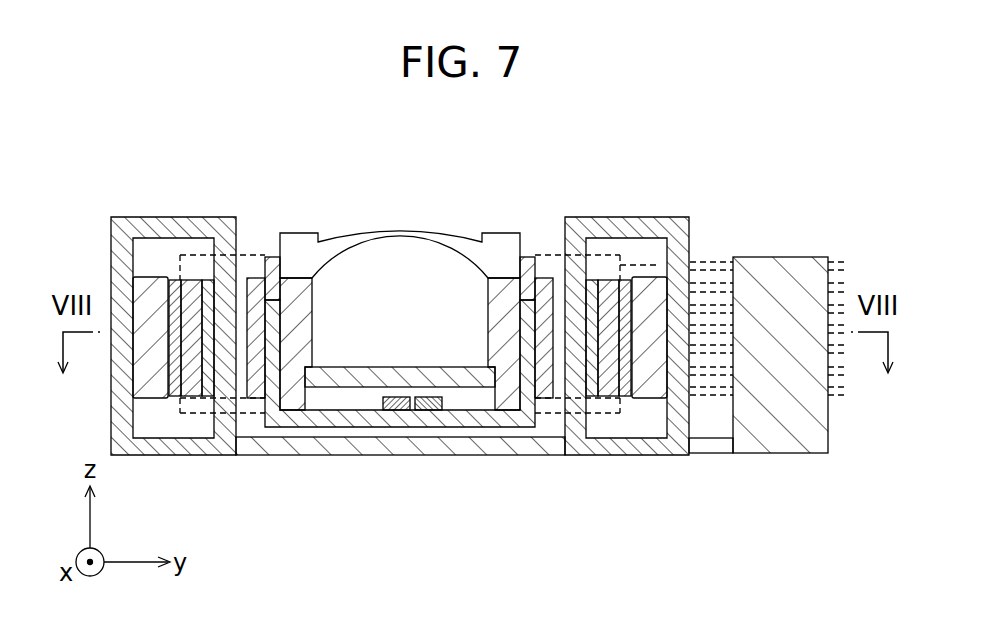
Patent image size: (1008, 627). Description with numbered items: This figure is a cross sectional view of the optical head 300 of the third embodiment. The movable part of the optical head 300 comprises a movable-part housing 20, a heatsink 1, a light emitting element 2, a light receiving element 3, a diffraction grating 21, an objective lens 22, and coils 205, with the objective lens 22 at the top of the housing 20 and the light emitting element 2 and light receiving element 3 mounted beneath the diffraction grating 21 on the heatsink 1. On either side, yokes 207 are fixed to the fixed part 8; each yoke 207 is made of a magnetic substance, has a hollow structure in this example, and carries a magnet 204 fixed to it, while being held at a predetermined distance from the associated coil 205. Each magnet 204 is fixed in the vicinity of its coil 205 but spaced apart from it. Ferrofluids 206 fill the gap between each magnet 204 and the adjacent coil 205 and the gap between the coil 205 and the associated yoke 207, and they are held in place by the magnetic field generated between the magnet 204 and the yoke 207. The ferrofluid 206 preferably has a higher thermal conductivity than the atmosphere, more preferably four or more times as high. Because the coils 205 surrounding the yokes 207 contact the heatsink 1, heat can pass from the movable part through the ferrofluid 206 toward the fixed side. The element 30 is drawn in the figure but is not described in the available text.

The optical head 300 is at (397, 304).
The heatsink 1 is at (291, 413).
The light emitting element 2 is at (388, 413).
The light receiving element 3 is at (431, 413).
The fixed part 8 is at (779, 261).
The movable-part housing 20 is at (524, 255).
The diffraction grating 21 is at (467, 382).
The objective lens 22 is at (405, 244).
The flexible printed circuit 30 is at (714, 262).
The magnet 204 is at (143, 378).
The coil 205 is at (196, 386).
The ferrofluid 206 is at (209, 372).
The yoke 207 is at (131, 451).